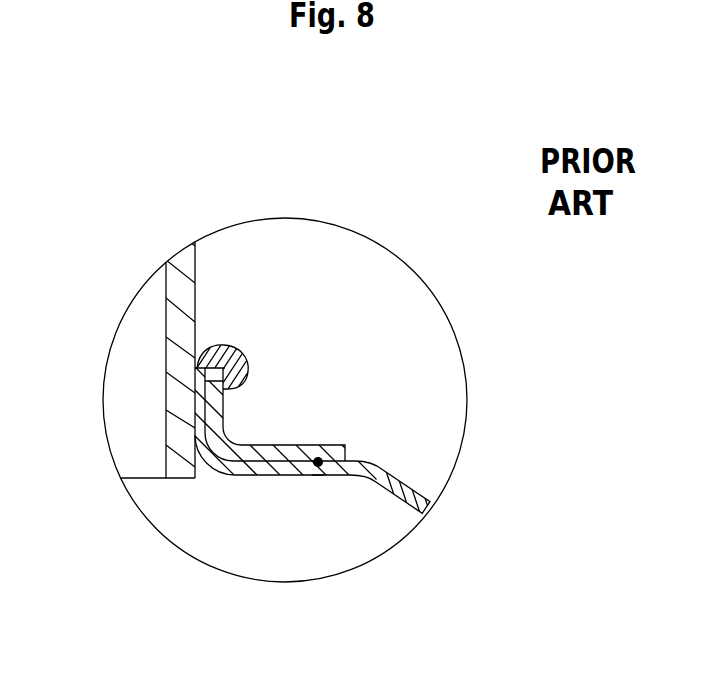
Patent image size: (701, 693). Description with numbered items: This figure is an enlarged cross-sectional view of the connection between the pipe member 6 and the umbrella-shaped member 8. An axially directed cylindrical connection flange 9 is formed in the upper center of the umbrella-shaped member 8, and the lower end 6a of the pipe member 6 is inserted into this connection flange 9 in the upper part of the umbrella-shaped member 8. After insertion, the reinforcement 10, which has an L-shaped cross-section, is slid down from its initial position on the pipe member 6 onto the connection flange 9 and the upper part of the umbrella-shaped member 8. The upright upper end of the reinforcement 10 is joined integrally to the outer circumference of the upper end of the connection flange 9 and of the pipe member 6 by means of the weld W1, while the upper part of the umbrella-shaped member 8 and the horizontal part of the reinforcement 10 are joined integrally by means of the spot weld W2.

The pipe member 6 is at (196, 297).
The lower end 6a is at (199, 467).
The umbrella-shaped member 8 is at (383, 463).
The connection flange 9 is at (204, 410).
The reinforcement 10 is at (319, 456).
The weld W1 is at (246, 355).
The spot weld W2 is at (318, 477).